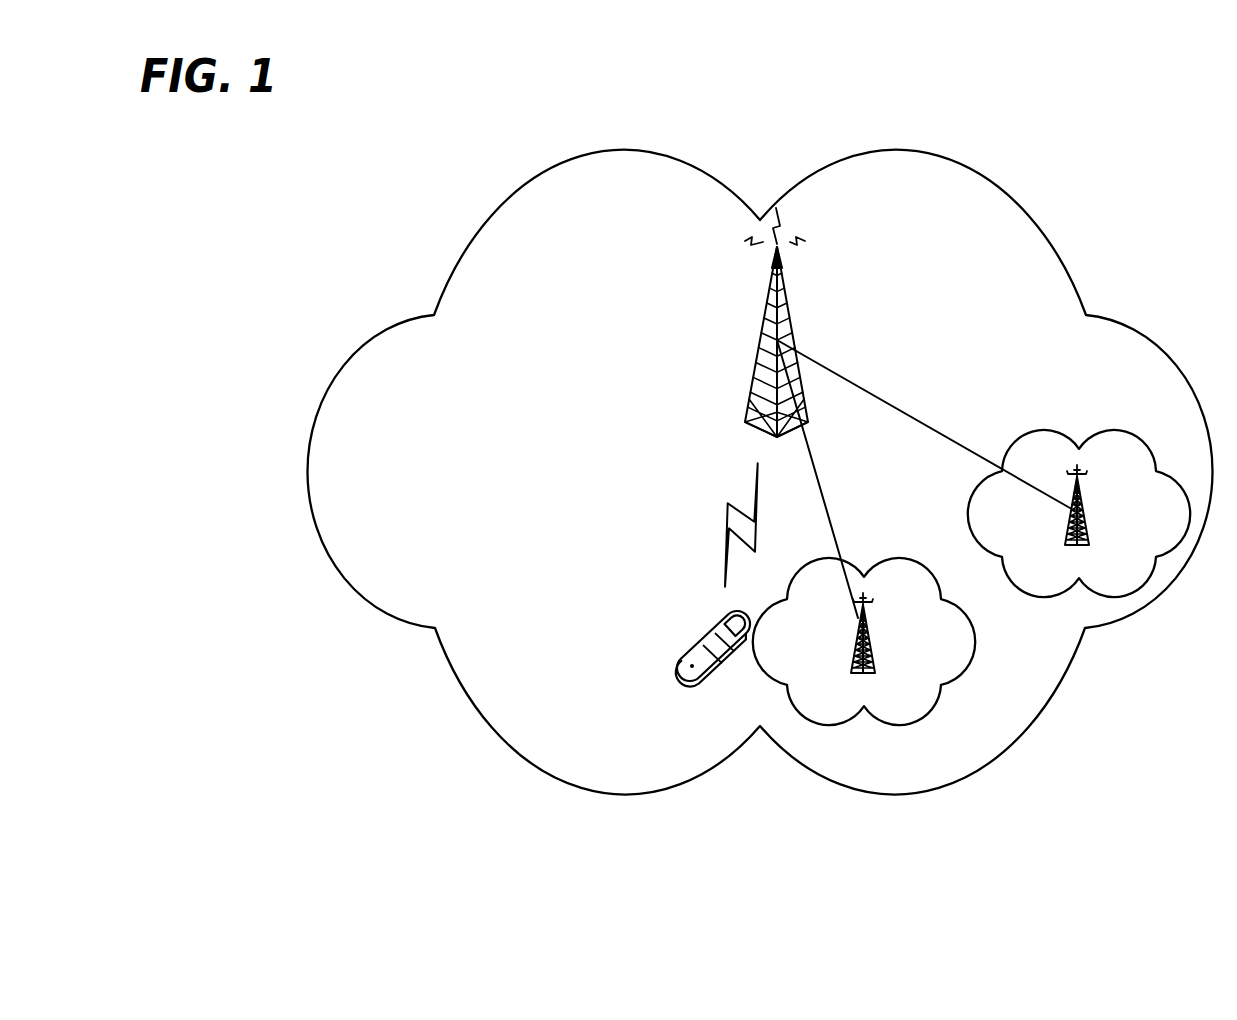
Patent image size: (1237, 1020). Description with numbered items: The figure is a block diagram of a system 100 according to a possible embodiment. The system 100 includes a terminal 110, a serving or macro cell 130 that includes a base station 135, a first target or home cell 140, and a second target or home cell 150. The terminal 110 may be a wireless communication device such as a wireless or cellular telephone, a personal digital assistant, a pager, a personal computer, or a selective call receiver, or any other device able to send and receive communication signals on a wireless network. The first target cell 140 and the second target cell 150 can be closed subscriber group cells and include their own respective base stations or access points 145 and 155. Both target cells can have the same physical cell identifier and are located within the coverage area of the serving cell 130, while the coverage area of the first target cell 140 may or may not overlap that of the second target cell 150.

The system 100 is at (1200, 183).
The terminal 110 is at (715, 623).
The serving or macro cell 130 is at (482, 227).
The base station 135 is at (760, 345).
The first target or home cell 140 is at (888, 727).
The base station or access point 145 is at (868, 637).
The second target or home cell 150 is at (1112, 430).
The base station or access point 155 is at (1088, 510).